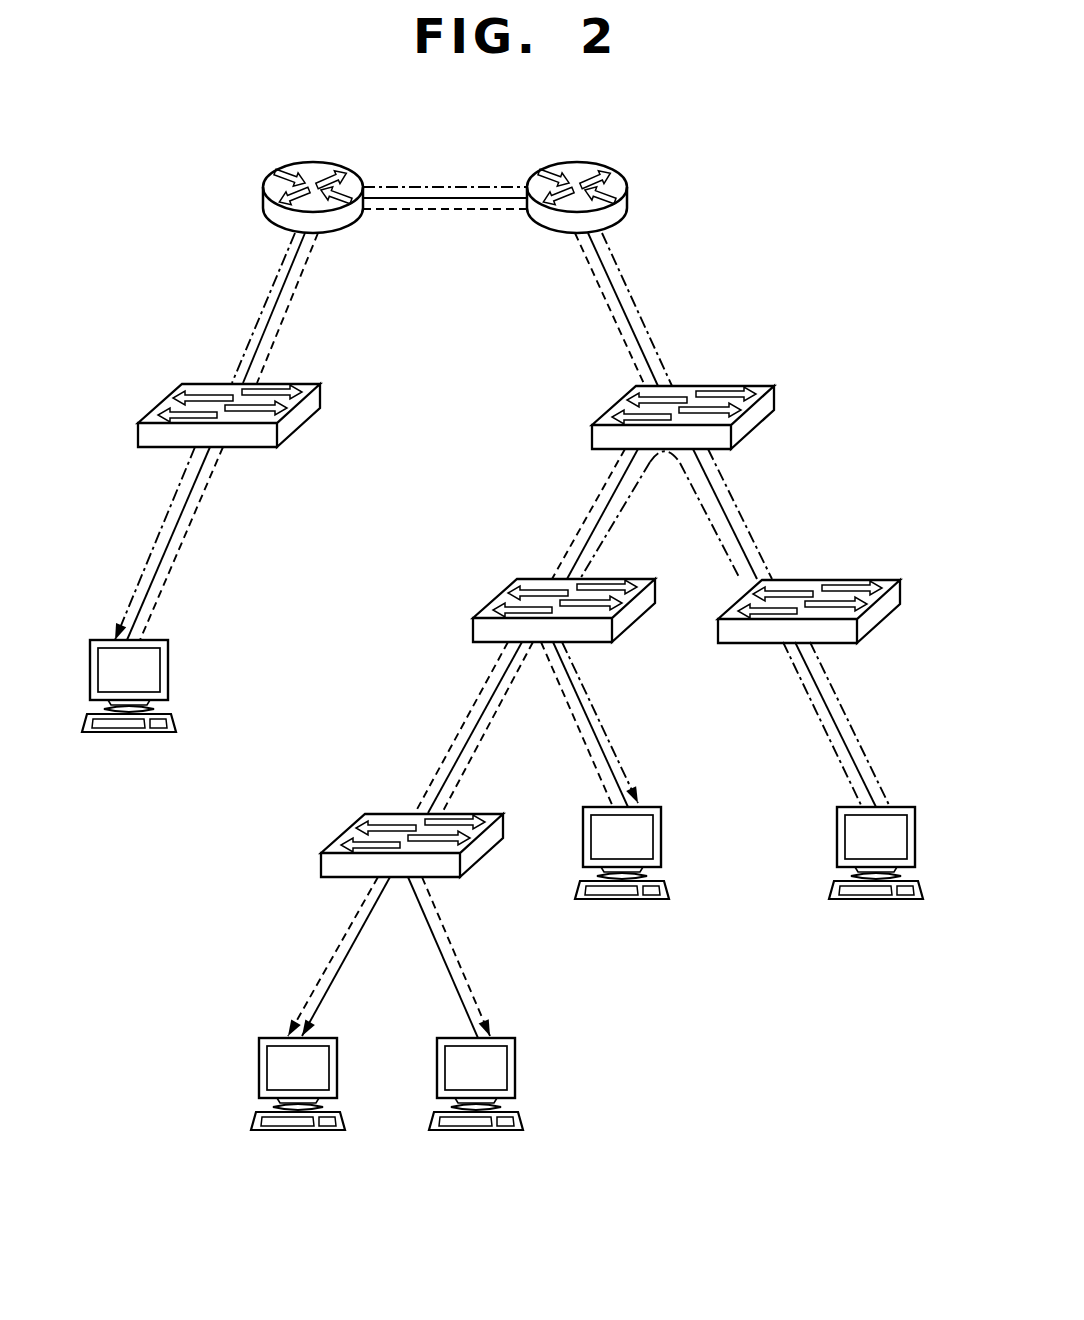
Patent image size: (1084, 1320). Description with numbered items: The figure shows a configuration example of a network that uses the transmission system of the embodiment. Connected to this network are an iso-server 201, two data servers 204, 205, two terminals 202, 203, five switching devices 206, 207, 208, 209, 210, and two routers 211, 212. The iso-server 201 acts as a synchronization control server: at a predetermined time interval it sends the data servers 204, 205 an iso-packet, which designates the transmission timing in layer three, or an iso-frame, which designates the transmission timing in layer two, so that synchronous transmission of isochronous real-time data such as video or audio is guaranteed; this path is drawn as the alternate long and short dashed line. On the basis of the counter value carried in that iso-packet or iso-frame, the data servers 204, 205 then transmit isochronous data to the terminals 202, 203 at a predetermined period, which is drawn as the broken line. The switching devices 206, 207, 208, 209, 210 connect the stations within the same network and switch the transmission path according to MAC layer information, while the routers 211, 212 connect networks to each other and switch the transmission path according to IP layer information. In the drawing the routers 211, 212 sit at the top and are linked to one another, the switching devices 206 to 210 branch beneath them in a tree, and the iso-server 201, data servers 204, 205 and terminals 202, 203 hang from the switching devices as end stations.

The iso-server 201 is at (908, 807).
The terminal 202 is at (510, 1038).
The terminal 203 is at (332, 1038).
The data server 204 is at (655, 807).
The data server 205 is at (165, 640).
The switching device 206 is at (797, 579).
The switching device 207 is at (690, 386).
The switching device 208 is at (620, 579).
The switching device 209 is at (487, 813).
The switching device 210 is at (293, 383).
The router 211 is at (627, 191).
The router 212 is at (263, 191).